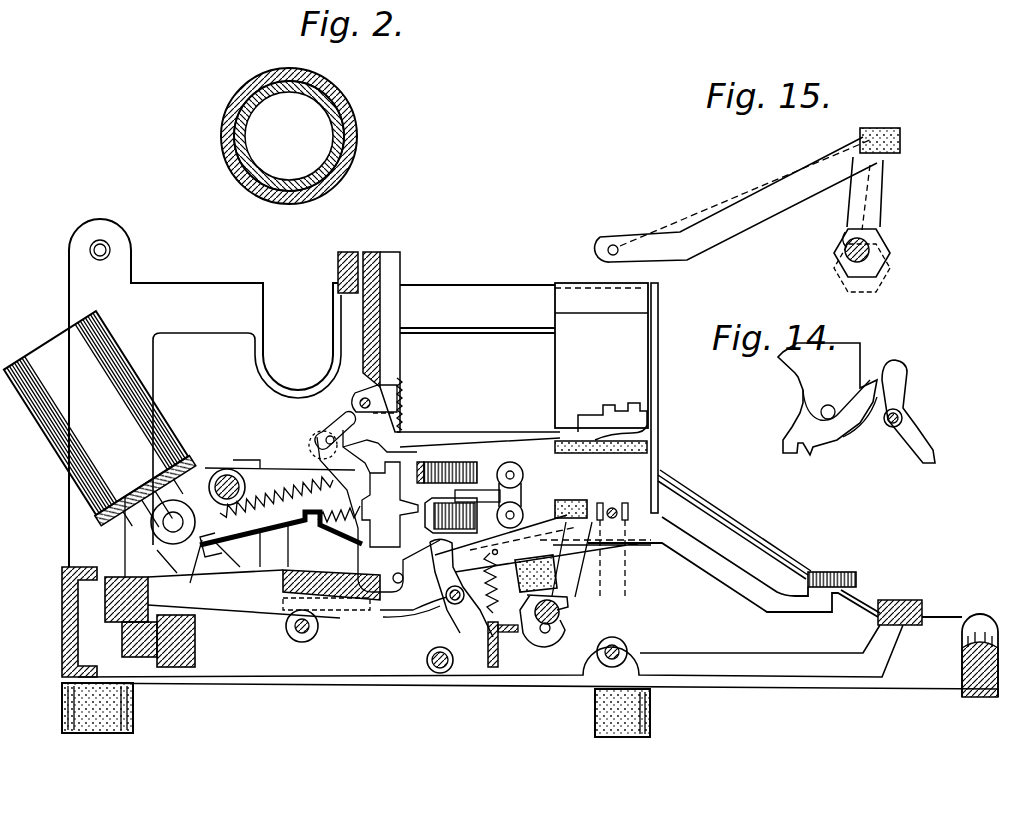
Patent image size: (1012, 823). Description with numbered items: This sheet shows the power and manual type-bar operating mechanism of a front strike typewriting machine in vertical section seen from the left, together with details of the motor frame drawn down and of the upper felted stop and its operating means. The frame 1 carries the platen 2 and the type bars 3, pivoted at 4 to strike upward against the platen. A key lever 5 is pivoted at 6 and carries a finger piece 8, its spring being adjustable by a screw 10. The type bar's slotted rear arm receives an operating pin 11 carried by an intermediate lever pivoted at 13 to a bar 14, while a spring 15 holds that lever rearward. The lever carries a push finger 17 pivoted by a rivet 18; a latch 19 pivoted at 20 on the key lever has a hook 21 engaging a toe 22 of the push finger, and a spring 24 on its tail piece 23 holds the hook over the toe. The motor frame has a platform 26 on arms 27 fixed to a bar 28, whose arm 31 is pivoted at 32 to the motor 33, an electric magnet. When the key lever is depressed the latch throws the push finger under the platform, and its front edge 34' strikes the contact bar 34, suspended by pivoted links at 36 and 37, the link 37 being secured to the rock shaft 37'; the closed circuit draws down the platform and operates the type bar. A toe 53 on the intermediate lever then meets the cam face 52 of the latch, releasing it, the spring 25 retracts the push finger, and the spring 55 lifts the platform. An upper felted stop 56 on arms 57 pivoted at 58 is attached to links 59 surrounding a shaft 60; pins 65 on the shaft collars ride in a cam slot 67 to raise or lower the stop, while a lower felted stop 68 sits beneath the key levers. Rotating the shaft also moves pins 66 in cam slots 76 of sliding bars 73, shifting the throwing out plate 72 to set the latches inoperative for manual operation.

In FIG. 2, the frame 1 is at (623, 370).
In FIG. 2, the platen 2 is at (357, 122).
In FIG. 2, the type bar 3 is at (330, 434).
In FIG. 2, the pivot 4 is at (357, 403).
In FIG. 2, the key lever 5 is at (710, 557).
In FIG. 2, the pivot 6 is at (118, 600).
In FIG. 2, the finger piece 8 is at (828, 574).
In FIG. 2, the screw 10 is at (190, 667).
In FIG. 2, the operating pin 11 is at (318, 440).
In FIG. 2, the pivot 13 is at (320, 640).
In FIG. 2, the bar 14 is at (290, 578).
In FIG. 2, the spring 15 is at (268, 508).
In FIG. 2, the push finger 17 is at (412, 565).
In FIG. 14, the push finger 17 is at (810, 345).
In FIG. 2, the rivet 18 is at (396, 592).
In FIG. 2, the latch 19 is at (478, 612).
In FIG. 14, the latch 19 is at (918, 447).
In FIG. 2, the pivot 20 is at (452, 605).
In FIG. 14, the pivot 20 is at (903, 412).
In FIG. 2, the hook 21 is at (436, 588).
In FIG. 14, the hook 21 is at (848, 405).
In FIG. 2, the toe 22 is at (412, 625).
In FIG. 14, the toe 22 is at (815, 432).
In FIG. 2, the tail piece 23 is at (490, 640).
In FIG. 14, the tail piece 23 is at (932, 466).
In FIG. 2, the spring 24 is at (490, 602).
In FIG. 2, the spring 25 is at (333, 523).
In FIG. 2, the platform 26 is at (425, 462).
In FIG. 2, the arms 27 is at (276, 478).
In FIG. 2, the bar 28 is at (225, 475).
In FIG. 2, the arm 31 is at (235, 565).
In FIG. 2, the pivot 32 is at (170, 525).
In FIG. 2, the motor 33 is at (68, 453).
In FIG. 2, the contact bar 34 is at (399, 544).
In FIG. 2, the front edge 34' is at (475, 433).
In FIG. 2, the pivoted link 36 is at (462, 497).
In FIG. 2, the link 37 is at (526, 495).
In FIG. 2, the rock shaft 37' is at (537, 454).
In FIG. 2, the cam face 52 is at (432, 637).
In FIG. 14, the cam face 52 is at (875, 407).
In FIG. 14, the toe 53 is at (866, 430).
In FIG. 2, the spring 55 is at (399, 408).
In FIG. 2, the felted stop 56 is at (578, 500).
In FIG. 15, the felted stop 56 is at (885, 130).
In FIG. 15, the arms 57 is at (740, 218).
In FIG. 2, the pivot 58 is at (302, 640).
In FIG. 15, the pivot 58 is at (614, 247).
In FIG. 15, the links 59 is at (882, 196).
In FIG. 2, the shaft 60 is at (558, 614).
In FIG. 15, the shaft 60 is at (848, 261).
In FIG. 15, the pins 65 is at (847, 233).
In FIG. 2, the pins 66 is at (549, 633).
In FIG. 15, the cam slot 67 is at (895, 255).
In FIG. 2, the felted stop 68 is at (558, 576).
In FIG. 2, the throwing out plate 72 is at (500, 662).
In FIG. 2, the sliding bars 73 is at (505, 640).
In FIG. 2, the cam slots 76 is at (546, 634).